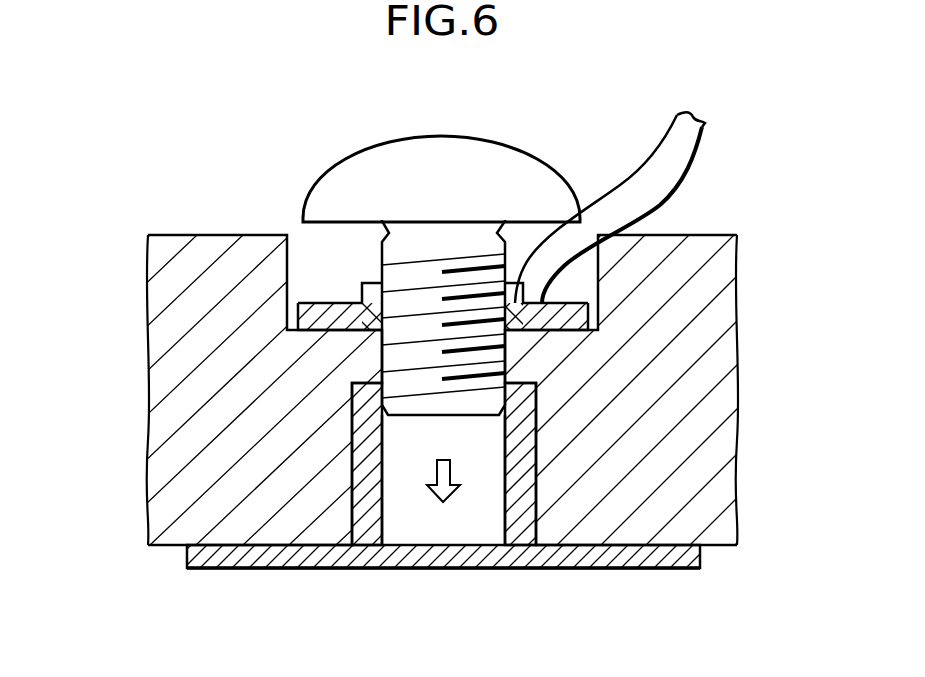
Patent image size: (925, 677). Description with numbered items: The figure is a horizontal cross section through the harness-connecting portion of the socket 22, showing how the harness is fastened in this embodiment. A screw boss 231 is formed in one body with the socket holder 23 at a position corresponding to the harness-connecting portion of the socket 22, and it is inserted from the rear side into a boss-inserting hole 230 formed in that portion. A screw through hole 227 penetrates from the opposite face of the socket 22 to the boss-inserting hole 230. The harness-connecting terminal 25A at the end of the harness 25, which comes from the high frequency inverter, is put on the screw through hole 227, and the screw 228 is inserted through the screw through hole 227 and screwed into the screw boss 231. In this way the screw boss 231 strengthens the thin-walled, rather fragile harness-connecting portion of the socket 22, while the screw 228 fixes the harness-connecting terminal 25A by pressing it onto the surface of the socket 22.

The socket 22 is at (180, 235).
The socket holder 23 is at (553, 558).
The harness 25 is at (673, 158).
The harness-connecting terminal 25A is at (562, 313).
The screw through hole 227 is at (507, 370).
The screw 228 is at (417, 272).
The boss-inserting hole 230 is at (353, 430).
The screw boss 231 is at (353, 480).